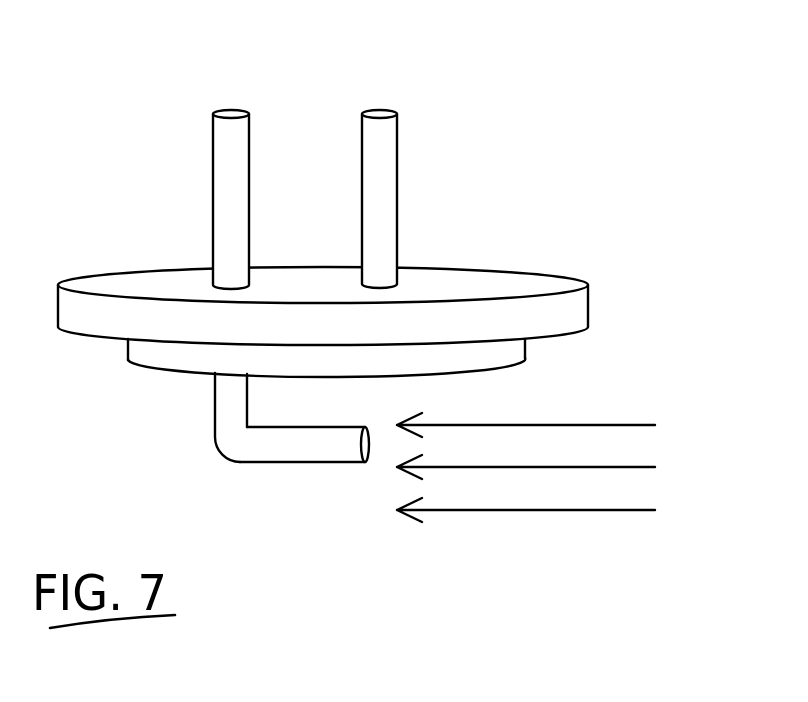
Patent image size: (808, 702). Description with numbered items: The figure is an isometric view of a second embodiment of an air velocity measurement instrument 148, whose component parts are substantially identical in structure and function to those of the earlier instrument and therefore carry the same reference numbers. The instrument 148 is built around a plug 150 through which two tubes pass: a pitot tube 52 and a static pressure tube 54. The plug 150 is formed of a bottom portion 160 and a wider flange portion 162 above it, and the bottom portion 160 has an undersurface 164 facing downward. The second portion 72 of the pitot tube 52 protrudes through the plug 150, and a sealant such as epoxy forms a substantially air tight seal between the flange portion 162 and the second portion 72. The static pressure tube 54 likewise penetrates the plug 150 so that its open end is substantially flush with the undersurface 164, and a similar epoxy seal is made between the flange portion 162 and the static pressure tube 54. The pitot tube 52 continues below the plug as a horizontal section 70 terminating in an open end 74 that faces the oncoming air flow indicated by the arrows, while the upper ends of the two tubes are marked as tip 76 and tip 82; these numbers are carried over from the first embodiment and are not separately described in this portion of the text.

The instrument 148 is at (605, 92).
The plug 150 is at (502, 287).
The flange portion 162 is at (577, 312).
The bottom portion 160 is at (493, 352).
The undersurface 164 is at (415, 383).
The pitot tube 52 is at (207, 186).
The tip of first electrode pin 76 is at (230, 110).
The static pressure tube 54 is at (400, 167).
The tip of second electrode pin 82 is at (377, 112).
The second portion 72 is at (250, 193).
The horizontal inlet tube 70 is at (293, 462).
The tube inlet opening 74 is at (369, 445).